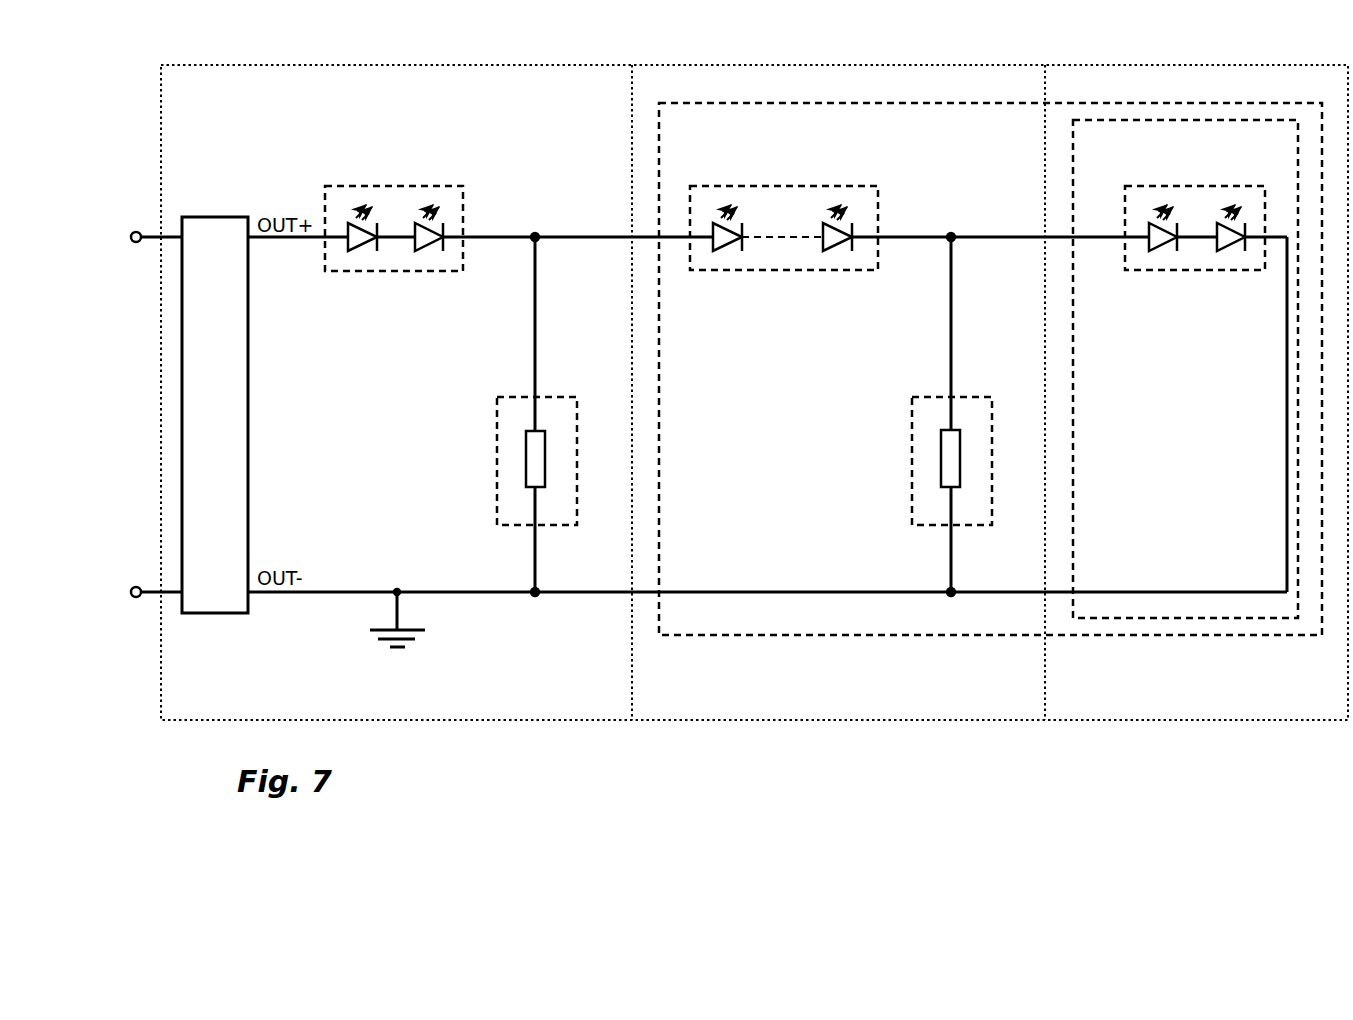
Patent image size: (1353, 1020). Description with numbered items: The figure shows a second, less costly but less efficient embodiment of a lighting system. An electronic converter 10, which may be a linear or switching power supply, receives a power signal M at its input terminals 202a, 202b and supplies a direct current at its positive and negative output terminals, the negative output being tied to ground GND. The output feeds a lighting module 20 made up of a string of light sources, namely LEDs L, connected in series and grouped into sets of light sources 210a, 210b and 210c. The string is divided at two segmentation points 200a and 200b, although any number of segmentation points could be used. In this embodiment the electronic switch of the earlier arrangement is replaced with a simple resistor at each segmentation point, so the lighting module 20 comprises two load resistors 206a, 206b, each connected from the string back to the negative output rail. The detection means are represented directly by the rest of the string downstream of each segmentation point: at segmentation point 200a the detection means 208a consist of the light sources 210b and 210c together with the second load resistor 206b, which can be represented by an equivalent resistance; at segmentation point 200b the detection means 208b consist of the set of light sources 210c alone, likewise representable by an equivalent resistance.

The lighting module 20 is at (275, 61).
The electronic converter 10 is at (227, 214).
The power signal M is at (134, 297).
The input terminal 202a is at (135, 227).
The input terminal 202b is at (135, 601).
The segmentation point 200a is at (633, 723).
The segmentation point 200b is at (1046, 723).
The detection means 208a is at (686, 100).
The detection means 208b is at (1083, 118).
The light sources 210a is at (438, 182).
The light sources 210b is at (843, 182).
The light sources 210c is at (1270, 155).
The resistor 206a is at (496, 395).
The resistor 206b is at (911, 395).
The LEDs L is at (428, 202).
The ground GND is at (409, 651).